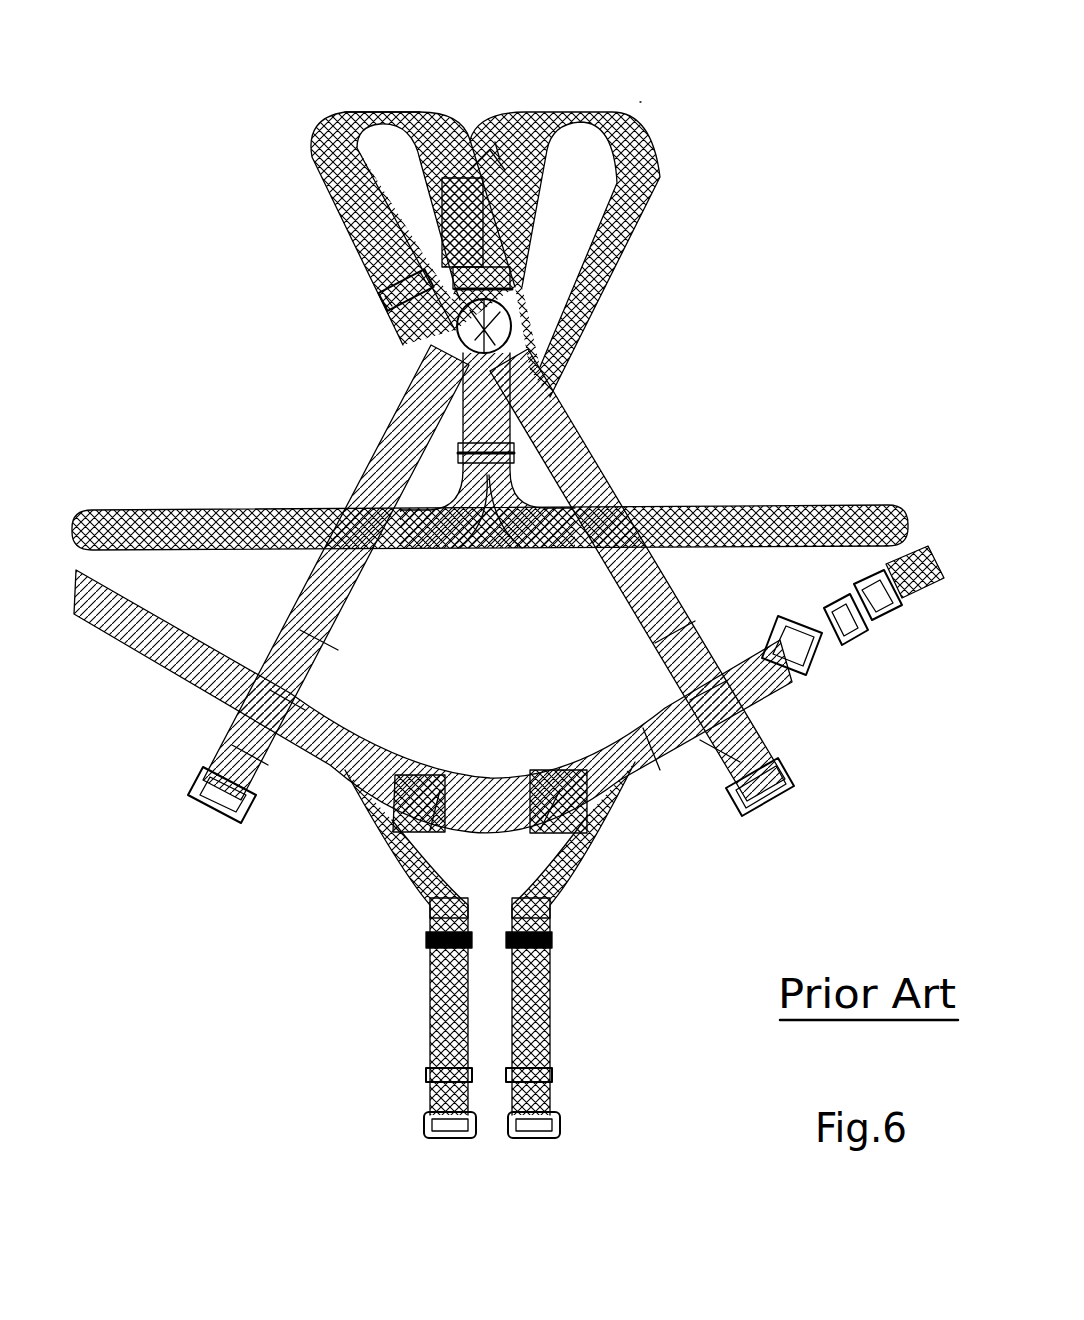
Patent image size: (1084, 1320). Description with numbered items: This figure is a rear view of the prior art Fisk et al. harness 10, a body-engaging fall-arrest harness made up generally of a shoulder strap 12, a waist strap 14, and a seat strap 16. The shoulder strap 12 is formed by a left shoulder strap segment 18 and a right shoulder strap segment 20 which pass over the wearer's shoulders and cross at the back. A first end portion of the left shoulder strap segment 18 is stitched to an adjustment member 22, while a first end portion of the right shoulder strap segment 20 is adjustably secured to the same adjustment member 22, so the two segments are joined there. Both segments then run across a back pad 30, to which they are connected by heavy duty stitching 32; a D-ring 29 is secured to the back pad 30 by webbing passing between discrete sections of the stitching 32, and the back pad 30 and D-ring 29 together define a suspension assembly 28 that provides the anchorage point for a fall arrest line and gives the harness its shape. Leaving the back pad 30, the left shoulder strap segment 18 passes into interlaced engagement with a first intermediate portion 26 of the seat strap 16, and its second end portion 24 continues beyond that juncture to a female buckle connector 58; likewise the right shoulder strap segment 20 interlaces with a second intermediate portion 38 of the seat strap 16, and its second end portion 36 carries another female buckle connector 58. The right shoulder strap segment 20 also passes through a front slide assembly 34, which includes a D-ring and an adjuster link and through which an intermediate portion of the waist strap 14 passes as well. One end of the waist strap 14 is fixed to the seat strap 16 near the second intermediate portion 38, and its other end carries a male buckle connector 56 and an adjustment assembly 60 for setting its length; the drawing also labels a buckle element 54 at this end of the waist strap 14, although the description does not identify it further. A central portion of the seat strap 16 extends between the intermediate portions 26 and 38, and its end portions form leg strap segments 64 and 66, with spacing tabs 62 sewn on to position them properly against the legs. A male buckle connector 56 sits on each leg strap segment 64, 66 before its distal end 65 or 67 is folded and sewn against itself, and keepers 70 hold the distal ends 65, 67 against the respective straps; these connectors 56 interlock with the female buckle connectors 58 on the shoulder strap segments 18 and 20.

The harness 10 is at (657, 104).
The shoulder strap 12 is at (382, 95).
The waist strap 14 is at (745, 502).
The seat strap 16 is at (493, 750).
The left shoulder strap segment 18 is at (603, 466).
The right shoulder strap segment 20 is at (390, 456).
The adjustment member 22 is at (378, 290).
The second end portion 24 is at (712, 772).
The first intermediate portion 26 is at (670, 620).
The suspension assembly 28 is at (495, 140).
The D-ring 29 is at (528, 300).
The back pad 30 is at (496, 140).
The stitching 32 is at (505, 212).
The front slide assembly 34 is at (518, 450).
The second end portion 36 is at (275, 766).
The second intermediate portion 38 is at (272, 665).
The belt buckle 54 is at (830, 586).
The male buckle connector 56 is at (850, 640).
The female buckle connector 58 is at (190, 792).
The adjustment assembly 60 is at (870, 630).
The spacing tabs 62 is at (432, 822).
The leg strap segment 64 is at (552, 995).
The distal end 65 is at (558, 905).
The leg strap segment 66 is at (430, 996).
The distal end 67 is at (425, 905).
The keeper 70 is at (428, 940).